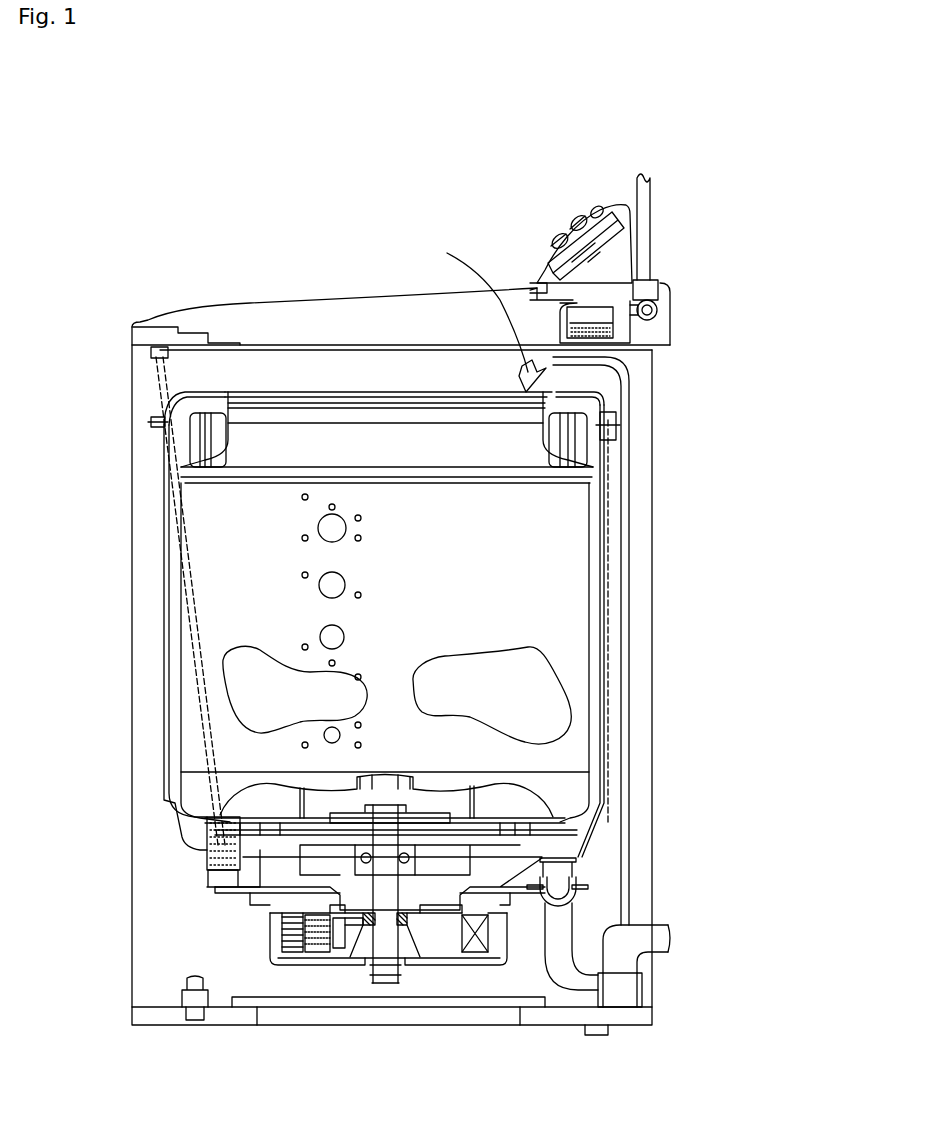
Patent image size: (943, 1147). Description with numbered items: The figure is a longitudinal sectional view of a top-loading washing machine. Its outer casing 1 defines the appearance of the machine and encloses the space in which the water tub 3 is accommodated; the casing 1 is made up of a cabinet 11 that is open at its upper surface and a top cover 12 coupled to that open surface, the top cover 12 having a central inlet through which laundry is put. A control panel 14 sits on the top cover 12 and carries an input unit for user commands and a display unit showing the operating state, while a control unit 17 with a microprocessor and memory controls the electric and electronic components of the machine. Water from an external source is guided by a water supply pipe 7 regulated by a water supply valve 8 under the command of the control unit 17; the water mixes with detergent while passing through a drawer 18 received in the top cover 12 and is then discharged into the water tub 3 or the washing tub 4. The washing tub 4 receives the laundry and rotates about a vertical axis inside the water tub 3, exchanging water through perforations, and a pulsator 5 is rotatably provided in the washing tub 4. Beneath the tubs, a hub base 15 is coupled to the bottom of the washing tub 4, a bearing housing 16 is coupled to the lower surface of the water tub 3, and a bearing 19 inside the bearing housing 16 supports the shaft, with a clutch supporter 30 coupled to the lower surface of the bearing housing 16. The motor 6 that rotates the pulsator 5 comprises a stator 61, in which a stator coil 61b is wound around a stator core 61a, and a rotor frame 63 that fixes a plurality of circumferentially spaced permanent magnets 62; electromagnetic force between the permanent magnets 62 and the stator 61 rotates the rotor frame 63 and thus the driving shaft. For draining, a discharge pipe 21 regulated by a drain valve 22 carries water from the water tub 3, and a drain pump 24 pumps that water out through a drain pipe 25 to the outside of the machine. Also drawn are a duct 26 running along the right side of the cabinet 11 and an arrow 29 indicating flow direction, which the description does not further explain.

The casing 1 is at (110, 222).
The cabinet 11 is at (130, 378).
The top cover 12 is at (158, 320).
The control panel 14 is at (578, 228).
The control unit 17 is at (613, 242).
The water supply pipe 7 is at (645, 196).
The water supply valve 8 is at (662, 305).
The drawer 18 is at (560, 317).
The water tub 3 is at (163, 565).
The washing tub 4 is at (180, 607).
The pulsator 5 is at (263, 802).
The hub base 15 is at (283, 822).
The bearing 19 is at (313, 883).
The bearing housing 16 is at (312, 900).
The motor 6 is at (284, 1012).
The stator 61 is at (305, 1017).
The stator core 61a is at (325, 962).
The stator coil 61b is at (293, 962).
The permanent magnets 62 is at (268, 955).
The rotor frame 63 is at (280, 932).
The clutch supporter 30 is at (382, 985).
The drain valve 22 is at (557, 887).
The discharge pipe 21 is at (580, 988).
The drain pump 24 is at (630, 990).
The drain pipe 25 is at (661, 938).
The air duct 26 is at (627, 597).
The air flow 29 is at (483, 311).